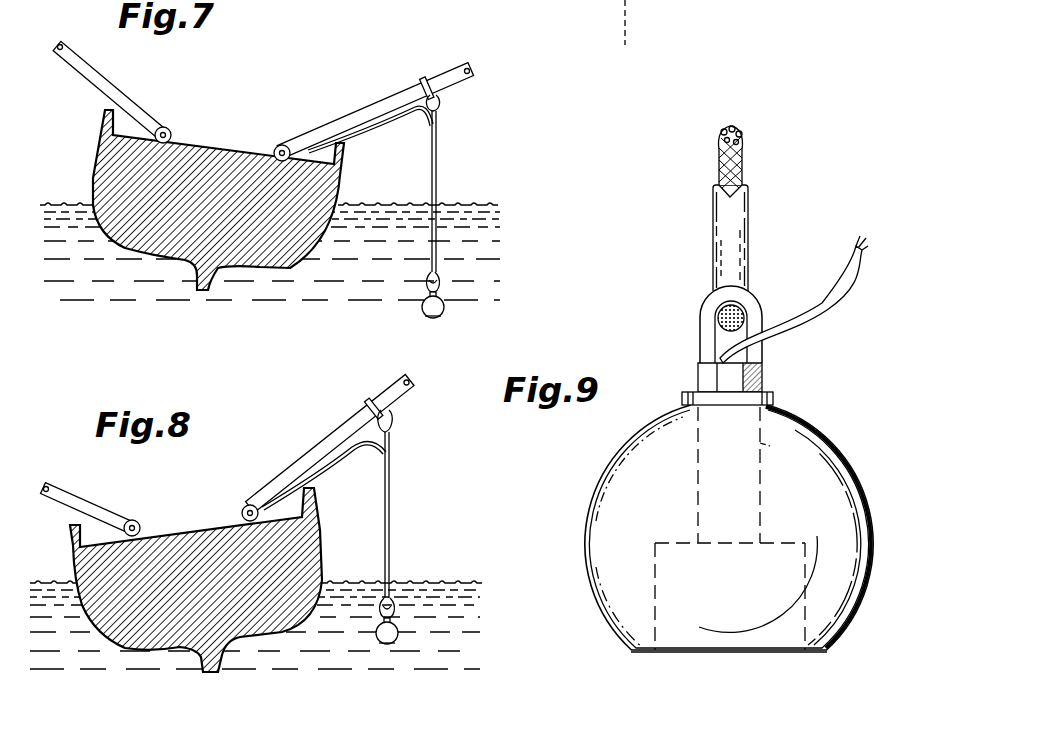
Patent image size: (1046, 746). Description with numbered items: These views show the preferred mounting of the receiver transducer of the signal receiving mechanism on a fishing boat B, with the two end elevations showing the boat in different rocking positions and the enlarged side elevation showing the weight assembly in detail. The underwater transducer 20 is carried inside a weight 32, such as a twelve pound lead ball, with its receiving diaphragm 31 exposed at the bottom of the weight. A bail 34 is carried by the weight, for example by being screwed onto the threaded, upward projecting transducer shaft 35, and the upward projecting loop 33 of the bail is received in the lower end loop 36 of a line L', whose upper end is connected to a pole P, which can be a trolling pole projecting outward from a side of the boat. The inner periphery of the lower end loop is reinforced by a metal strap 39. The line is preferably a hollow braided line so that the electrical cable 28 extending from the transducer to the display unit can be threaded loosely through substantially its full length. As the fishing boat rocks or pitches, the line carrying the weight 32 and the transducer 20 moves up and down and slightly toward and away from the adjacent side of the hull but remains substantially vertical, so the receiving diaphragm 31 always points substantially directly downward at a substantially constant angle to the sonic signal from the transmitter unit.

In FIG. 7, the fishing boat B is at (200, 148).
In FIG. 8, the fishing boat B is at (163, 535).
In FIG. 7, the pole P is at (447, 72).
In FIG. 8, the pole P is at (390, 388).
In FIG. 7, the line L is at (443, 151).
In FIG. 8, the line L is at (392, 492).
In FIG. 9, the line L is at (745, 142).
In FIG. 7, the electrical cable 28 is at (444, 283).
In FIG. 8, the electrical cable 28 is at (362, 446).
In FIG. 9, the electrical cable 28 is at (829, 309).
In FIG. 7, the weight 32 is at (446, 304).
In FIG. 8, the weight 32 is at (392, 620).
In FIG. 9, the weight 32 is at (838, 470).
In FIG. 7, the receiving diaphragm 31 is at (433, 318).
In FIG. 8, the receiving diaphragm 31 is at (388, 645).
In FIG. 9, the receiving diaphragm 31 is at (770, 652).
In FIG. 9, the metal straps 39 is at (733, 228).
In FIG. 9, the upward projecting loop 33 is at (757, 306).
In FIG. 9, the lower end loop 36 is at (717, 321).
In FIG. 9, the bail 34 is at (763, 378).
In FIG. 9, the transducer shaft 35 is at (771, 434).
In FIG. 9, the underwater transducer 20 is at (805, 584).